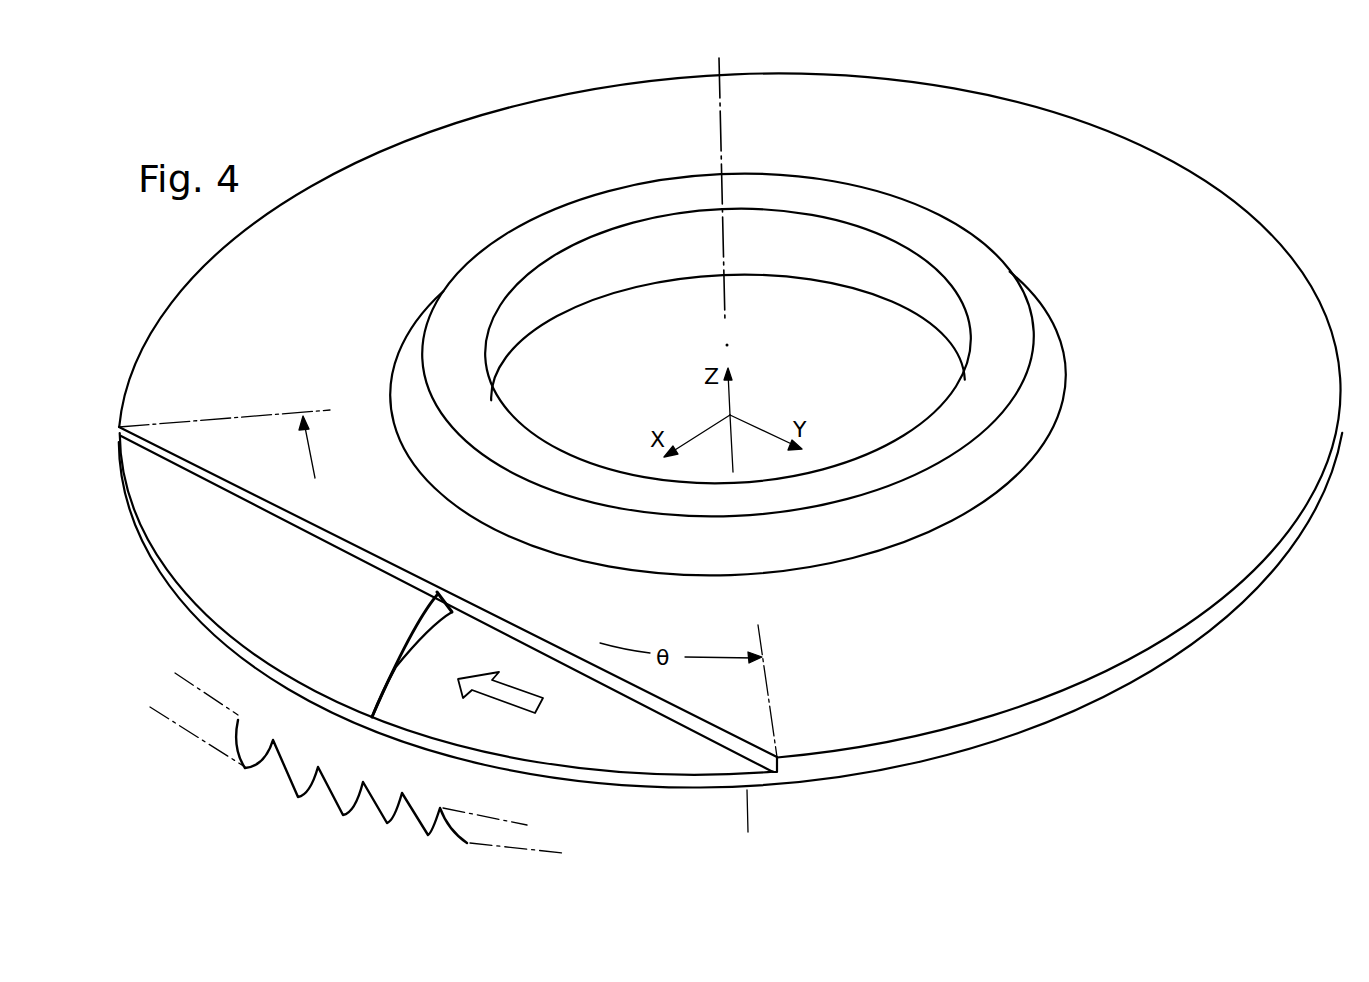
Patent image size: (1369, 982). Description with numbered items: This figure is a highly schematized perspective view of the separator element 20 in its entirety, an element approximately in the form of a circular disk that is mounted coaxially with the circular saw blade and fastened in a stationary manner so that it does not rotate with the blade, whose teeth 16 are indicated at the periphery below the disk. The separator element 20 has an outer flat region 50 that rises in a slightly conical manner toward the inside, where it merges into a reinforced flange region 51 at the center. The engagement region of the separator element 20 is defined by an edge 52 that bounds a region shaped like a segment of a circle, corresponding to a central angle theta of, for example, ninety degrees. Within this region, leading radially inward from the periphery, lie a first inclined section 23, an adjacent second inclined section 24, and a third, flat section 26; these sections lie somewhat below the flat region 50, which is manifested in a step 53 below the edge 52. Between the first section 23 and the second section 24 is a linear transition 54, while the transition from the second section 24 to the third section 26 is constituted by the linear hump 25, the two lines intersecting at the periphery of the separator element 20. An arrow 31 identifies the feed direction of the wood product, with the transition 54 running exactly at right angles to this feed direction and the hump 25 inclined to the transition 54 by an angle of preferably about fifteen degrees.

The teeth 16 is at (380, 803).
The separator element 20 is at (729, 402).
The first inclined section 23 is at (592, 740).
The second inclined section 24 is at (422, 629).
The hump 25 is at (419, 629).
The third, flat section 26 is at (315, 596).
The arrow 31 is at (507, 697).
The outer flat region 50 is at (976, 618).
The reinforced flange region 51 is at (1052, 342).
The edge 52 is at (418, 570).
The step 53 is at (534, 636).
The linear transition 54 is at (407, 667).